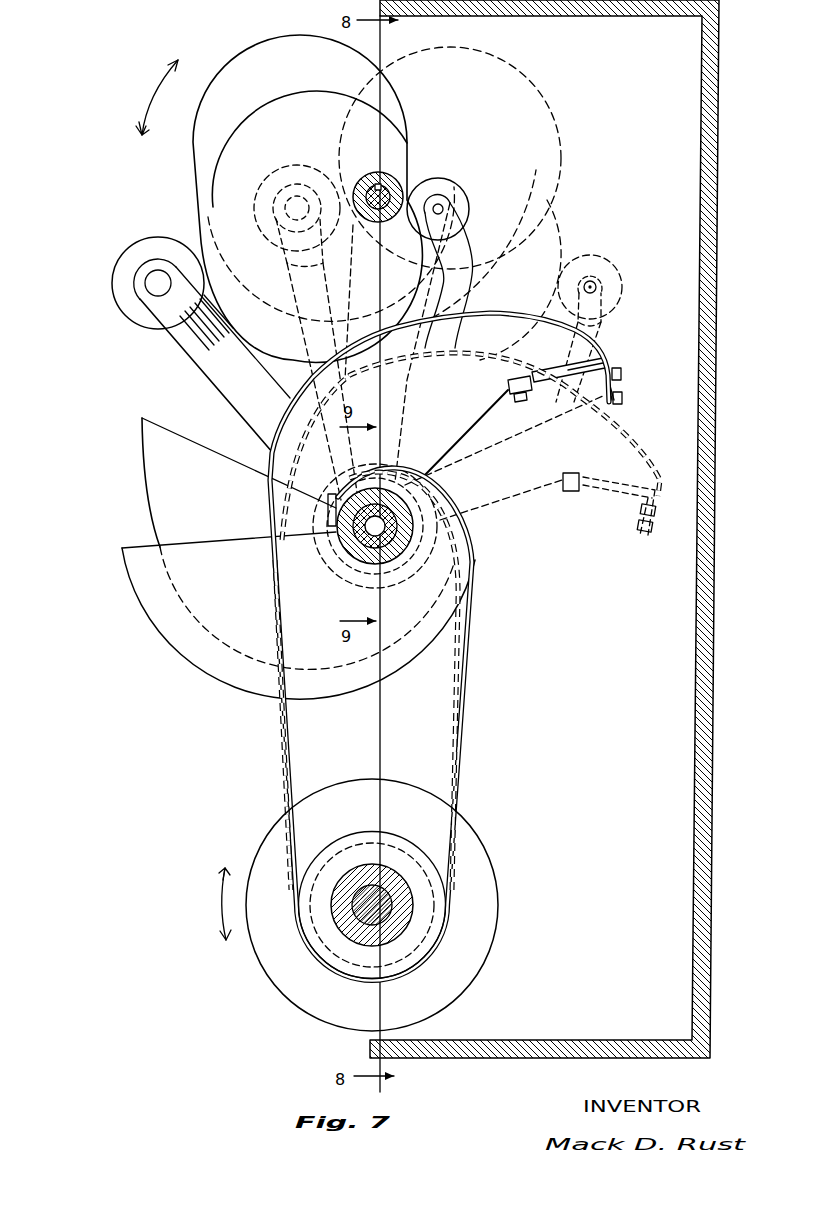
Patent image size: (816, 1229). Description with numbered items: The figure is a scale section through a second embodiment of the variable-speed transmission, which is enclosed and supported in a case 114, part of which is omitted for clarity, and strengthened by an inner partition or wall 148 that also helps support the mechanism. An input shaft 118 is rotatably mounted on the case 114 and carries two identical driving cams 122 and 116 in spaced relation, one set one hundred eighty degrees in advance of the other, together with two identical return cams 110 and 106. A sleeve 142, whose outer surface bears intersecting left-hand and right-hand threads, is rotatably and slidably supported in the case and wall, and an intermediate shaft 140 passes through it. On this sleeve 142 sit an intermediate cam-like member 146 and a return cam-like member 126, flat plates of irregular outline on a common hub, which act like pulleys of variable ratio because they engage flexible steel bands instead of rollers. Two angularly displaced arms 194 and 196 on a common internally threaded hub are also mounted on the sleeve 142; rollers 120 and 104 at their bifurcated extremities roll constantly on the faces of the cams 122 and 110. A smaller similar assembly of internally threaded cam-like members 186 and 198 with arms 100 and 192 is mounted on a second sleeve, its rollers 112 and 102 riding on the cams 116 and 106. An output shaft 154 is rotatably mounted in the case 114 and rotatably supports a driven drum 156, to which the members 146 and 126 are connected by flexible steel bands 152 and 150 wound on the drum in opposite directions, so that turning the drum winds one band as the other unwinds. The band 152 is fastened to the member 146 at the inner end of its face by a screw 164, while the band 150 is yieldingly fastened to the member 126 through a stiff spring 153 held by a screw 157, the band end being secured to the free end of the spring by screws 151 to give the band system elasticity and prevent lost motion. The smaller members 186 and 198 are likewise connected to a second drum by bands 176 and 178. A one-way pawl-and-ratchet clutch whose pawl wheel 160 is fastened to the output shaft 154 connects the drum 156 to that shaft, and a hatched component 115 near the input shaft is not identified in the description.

The arm 100 is at (310, 360).
The roller 102 is at (612, 286).
The roller 104 is at (460, 210).
The return cam 106 is at (560, 242).
The return cam 110 is at (244, 68).
The roller 112 is at (262, 214).
The case 114 is at (707, 172).
The shaft 115 is at (380, 178).
The driving cam 116 is at (489, 56).
The input shaft 118 is at (364, 302).
The roller 120 is at (124, 268).
The driving cam 122 is at (205, 238).
The return cam-like member 126 is at (604, 350).
The intermediate shaft 140 is at (353, 564).
The sleeve 142 is at (408, 548).
The intermediate cam-like member 146 is at (160, 605).
The inner partition or wall 148 is at (378, 750).
The flexible steel band 150 is at (603, 335).
The screws 151 is at (619, 384).
The flexible steel band 152 is at (470, 659).
The stiff spring 153 is at (573, 379).
The output shaft 154 is at (365, 912).
The driven drum 156 is at (420, 956).
The screw 157 is at (520, 398).
The pawl wheel 160 is at (480, 855).
The screw 164 is at (328, 513).
The flexible steel band 176 is at (450, 750).
The flexible steel band 178 is at (293, 718).
The intermediate cam-like member 186 is at (146, 467).
The arm 192 is at (490, 442).
The arm 194 is at (232, 404).
The arm 196 is at (438, 398).
The return cam-like member 198 is at (630, 447).